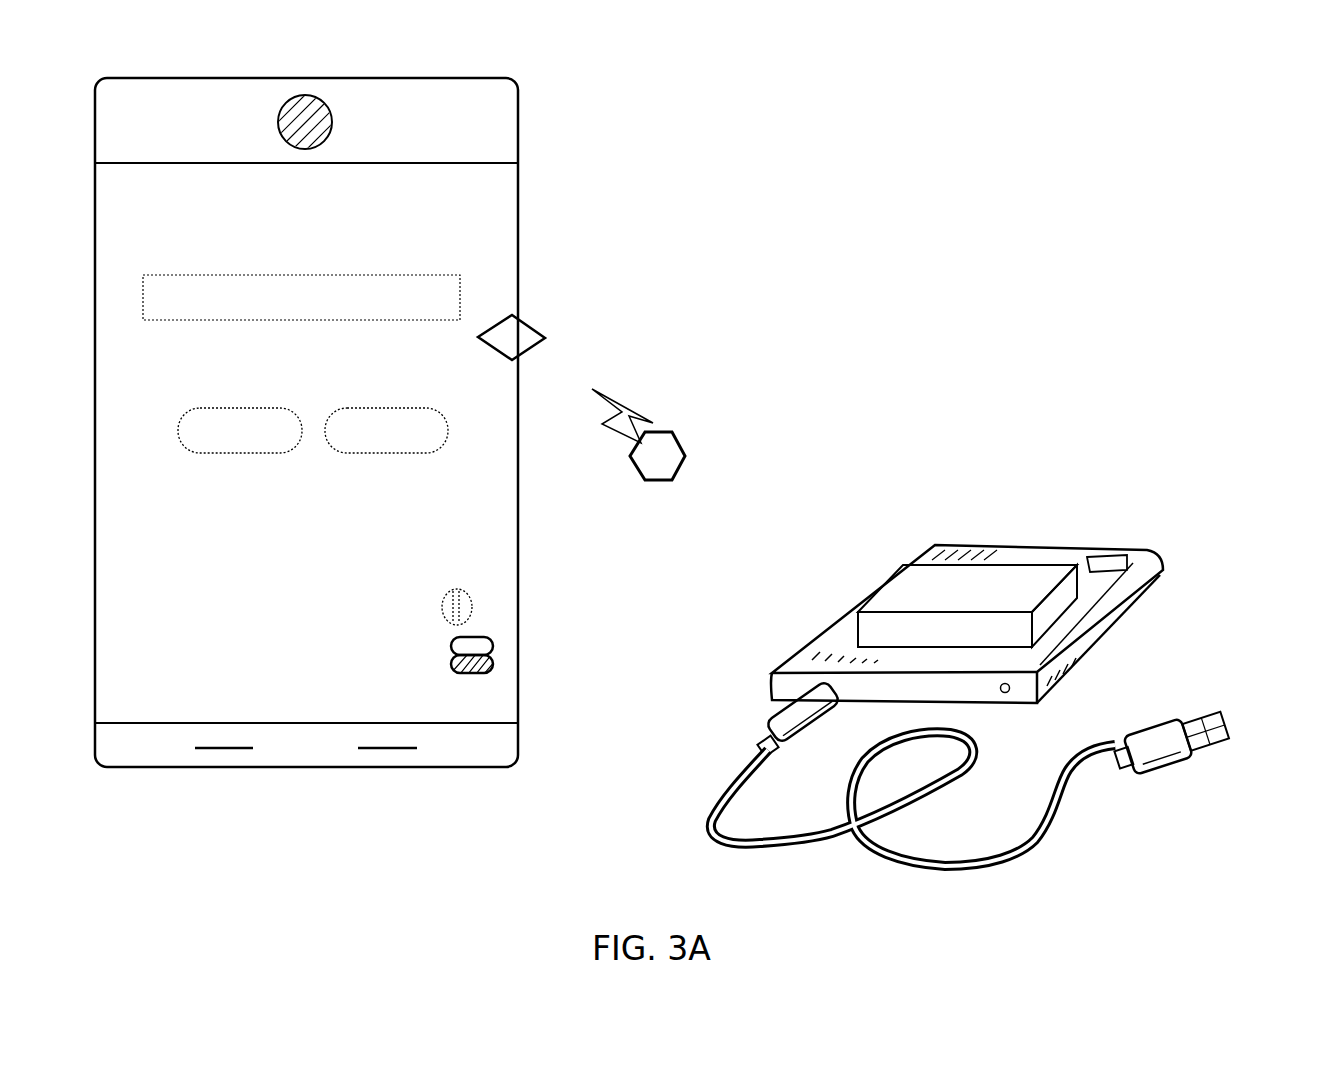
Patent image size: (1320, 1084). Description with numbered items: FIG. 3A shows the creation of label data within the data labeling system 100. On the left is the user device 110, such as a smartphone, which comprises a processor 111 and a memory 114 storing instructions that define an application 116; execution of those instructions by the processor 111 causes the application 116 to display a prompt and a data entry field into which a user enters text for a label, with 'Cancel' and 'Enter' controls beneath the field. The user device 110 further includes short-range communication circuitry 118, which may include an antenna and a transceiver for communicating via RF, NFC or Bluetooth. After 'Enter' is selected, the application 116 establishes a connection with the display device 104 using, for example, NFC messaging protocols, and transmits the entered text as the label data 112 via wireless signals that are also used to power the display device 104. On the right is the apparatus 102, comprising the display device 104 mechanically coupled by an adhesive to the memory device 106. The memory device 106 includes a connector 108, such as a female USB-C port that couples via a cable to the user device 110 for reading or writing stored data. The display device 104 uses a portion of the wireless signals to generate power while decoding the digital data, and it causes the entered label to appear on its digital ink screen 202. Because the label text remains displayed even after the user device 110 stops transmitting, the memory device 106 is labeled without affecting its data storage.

The data labeling system 100 is at (1202, 97).
The apparatus 102 is at (1218, 410).
The display device 104 is at (959, 577).
The memory device 106 is at (1157, 563).
The connector 108 is at (810, 687).
The user device 110 is at (513, 77).
The processor 111 is at (490, 672).
The label data 112 is at (397, 303).
The memory 114 is at (493, 648).
The application 116 is at (475, 607).
The short-range communication circuitry 118 is at (527, 333).
The digital ink screen 202 is at (895, 597).